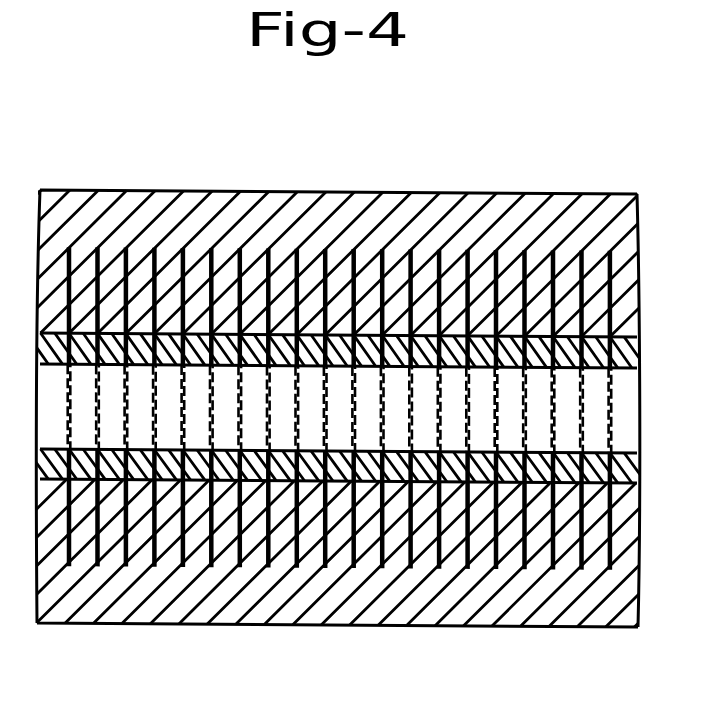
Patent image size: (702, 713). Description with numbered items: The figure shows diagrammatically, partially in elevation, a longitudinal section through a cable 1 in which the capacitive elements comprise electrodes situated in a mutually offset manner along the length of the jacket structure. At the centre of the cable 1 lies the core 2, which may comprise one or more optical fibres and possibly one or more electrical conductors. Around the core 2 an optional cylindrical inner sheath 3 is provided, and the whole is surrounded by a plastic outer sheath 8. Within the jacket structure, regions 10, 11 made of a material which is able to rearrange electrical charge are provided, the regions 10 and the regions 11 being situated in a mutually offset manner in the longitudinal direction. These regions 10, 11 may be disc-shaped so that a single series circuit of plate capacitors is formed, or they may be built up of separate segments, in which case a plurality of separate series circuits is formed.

The cable 1 is at (490, 182).
The outer sheath 8 is at (580, 218).
The regions 10 is at (105, 247).
The regions 11 is at (130, 247).
The core 2 is at (307, 430).
The inner sheath 3 is at (495, 482).